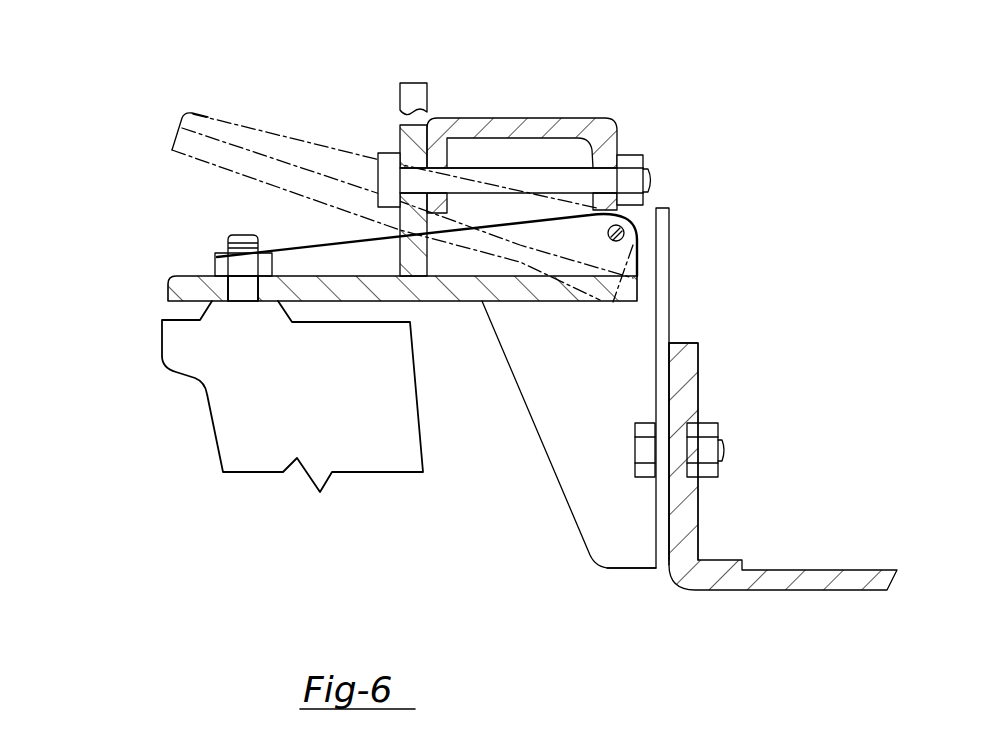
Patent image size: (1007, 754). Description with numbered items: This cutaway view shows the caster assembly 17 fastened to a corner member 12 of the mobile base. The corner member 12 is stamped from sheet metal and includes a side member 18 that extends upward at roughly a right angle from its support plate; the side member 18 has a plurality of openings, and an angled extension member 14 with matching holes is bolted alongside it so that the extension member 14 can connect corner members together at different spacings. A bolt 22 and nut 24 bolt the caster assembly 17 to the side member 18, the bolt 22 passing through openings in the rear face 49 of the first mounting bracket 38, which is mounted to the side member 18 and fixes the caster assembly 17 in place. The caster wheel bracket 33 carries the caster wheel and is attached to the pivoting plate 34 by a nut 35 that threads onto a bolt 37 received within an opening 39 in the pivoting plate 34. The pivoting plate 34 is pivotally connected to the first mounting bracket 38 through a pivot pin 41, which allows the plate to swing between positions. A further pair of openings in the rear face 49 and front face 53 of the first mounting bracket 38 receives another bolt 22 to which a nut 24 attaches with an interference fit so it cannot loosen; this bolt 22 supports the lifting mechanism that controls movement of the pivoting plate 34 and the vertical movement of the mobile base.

The corner member 12 is at (770, 552).
The extension member 14 is at (693, 372).
The caster assembly 17 is at (162, 102).
The side member 18 is at (677, 345).
The bolt 22 is at (391, 160).
The nut 24 is at (645, 160).
The caster wheel bracket 33 is at (311, 410).
The pivoting plate 34 is at (272, 143).
The nut 35 is at (220, 256).
The bolt 37 is at (240, 235).
The first mounting bracket 38 is at (557, 425).
The opening 39 is at (248, 303).
The pivot pin 41 is at (608, 236).
The rear face 49 is at (630, 140).
The front face 53 is at (430, 120).